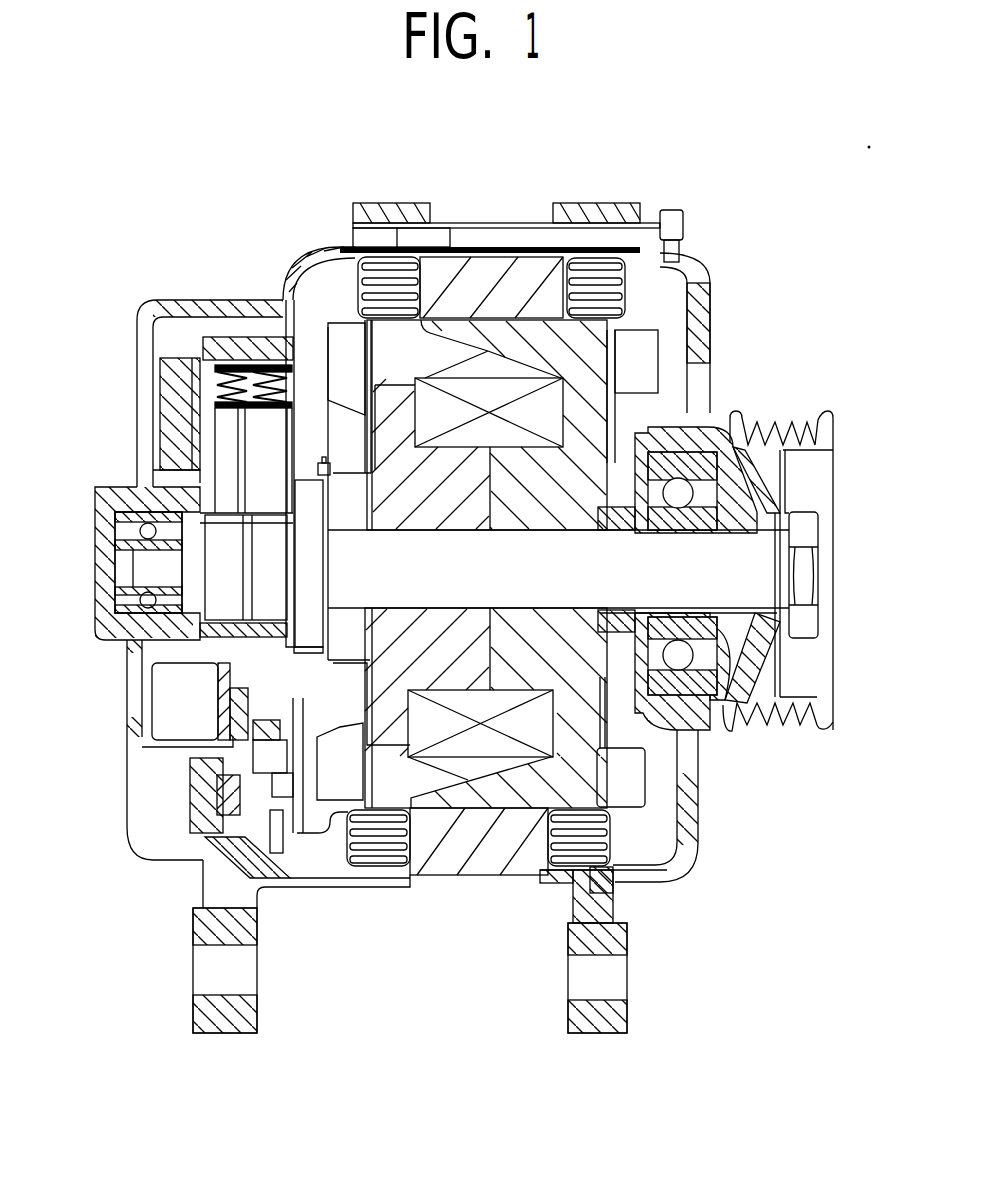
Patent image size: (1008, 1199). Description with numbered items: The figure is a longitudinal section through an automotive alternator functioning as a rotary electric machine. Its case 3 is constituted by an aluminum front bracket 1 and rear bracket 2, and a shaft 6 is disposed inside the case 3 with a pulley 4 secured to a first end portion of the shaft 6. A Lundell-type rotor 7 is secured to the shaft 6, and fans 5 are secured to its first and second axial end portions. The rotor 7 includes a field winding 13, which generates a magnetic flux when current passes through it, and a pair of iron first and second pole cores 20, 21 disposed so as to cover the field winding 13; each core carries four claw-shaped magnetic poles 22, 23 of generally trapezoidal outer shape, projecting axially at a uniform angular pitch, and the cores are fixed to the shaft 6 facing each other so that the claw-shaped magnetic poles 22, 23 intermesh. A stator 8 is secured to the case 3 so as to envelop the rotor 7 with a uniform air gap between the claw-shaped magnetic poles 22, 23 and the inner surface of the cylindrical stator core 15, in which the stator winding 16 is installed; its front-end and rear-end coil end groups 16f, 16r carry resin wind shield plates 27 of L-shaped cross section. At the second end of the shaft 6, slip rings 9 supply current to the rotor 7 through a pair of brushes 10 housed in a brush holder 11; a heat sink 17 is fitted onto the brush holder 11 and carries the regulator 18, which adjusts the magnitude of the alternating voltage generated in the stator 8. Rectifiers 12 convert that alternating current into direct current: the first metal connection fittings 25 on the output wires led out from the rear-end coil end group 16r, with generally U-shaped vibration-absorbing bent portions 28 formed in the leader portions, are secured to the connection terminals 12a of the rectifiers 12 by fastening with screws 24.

The front bracket 1 is at (713, 317).
The rear bracket 2 is at (153, 862).
The case 3 is at (637, 927).
The pulley 4 is at (812, 413).
The fans 5 is at (662, 353).
The shaft 6 is at (763, 563).
The rotor 7 is at (486, 639).
The stator 8 is at (527, 493).
The slip rings 9 is at (273, 577).
The brushes 10 is at (270, 472).
The brush holder 11 is at (220, 350).
The rectifiers 12 is at (163, 746).
The connection terminals 12a is at (220, 787).
The field winding 13 is at (475, 757).
The stator core 15 is at (503, 253).
The stator winding 16 is at (428, 225).
The rear-end coil end group 16r is at (340, 253).
The front-end coil end group 16f is at (660, 252).
The heat sink 17 is at (160, 390).
The regulator 18 is at (200, 360).
The first pole core 20 is at (542, 785).
The second pole core 21 is at (420, 785).
The first claw-shaped magnetic poles 22 is at (660, 330).
The second claw-shaped magnetic poles 23 is at (413, 350).
The screws 24 is at (268, 737).
The first metal connection fittings 25 is at (283, 858).
The wind shield plates 27 is at (610, 833).
The vibration-absorbing bent portions 28 is at (307, 868).